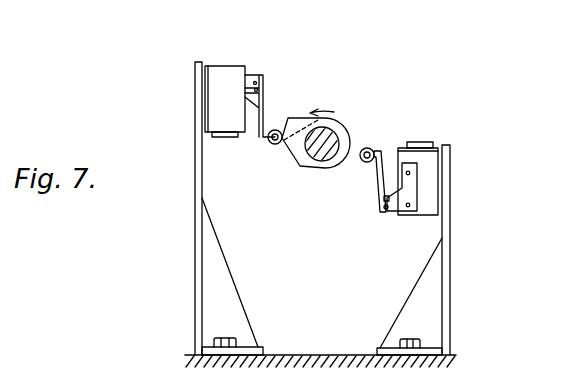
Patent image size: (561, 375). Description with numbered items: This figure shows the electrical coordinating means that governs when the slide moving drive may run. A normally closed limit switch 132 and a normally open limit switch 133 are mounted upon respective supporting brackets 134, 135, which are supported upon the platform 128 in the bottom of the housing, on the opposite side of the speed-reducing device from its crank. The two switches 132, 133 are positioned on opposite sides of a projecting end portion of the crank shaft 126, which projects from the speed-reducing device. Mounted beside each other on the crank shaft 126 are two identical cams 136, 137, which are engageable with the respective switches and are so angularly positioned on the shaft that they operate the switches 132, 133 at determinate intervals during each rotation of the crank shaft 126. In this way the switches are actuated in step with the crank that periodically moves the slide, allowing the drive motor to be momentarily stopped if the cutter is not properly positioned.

The crank shaft 126 is at (322, 158).
The platform 128 is at (315, 323).
The normally closed limit switch 132 is at (232, 73).
The normally open limit switch 133 is at (426, 212).
The supporting bracket 134 is at (195, 222).
The supporting bracket 135 is at (443, 273).
The cam 136 is at (290, 150).
The cam 137 is at (290, 118).